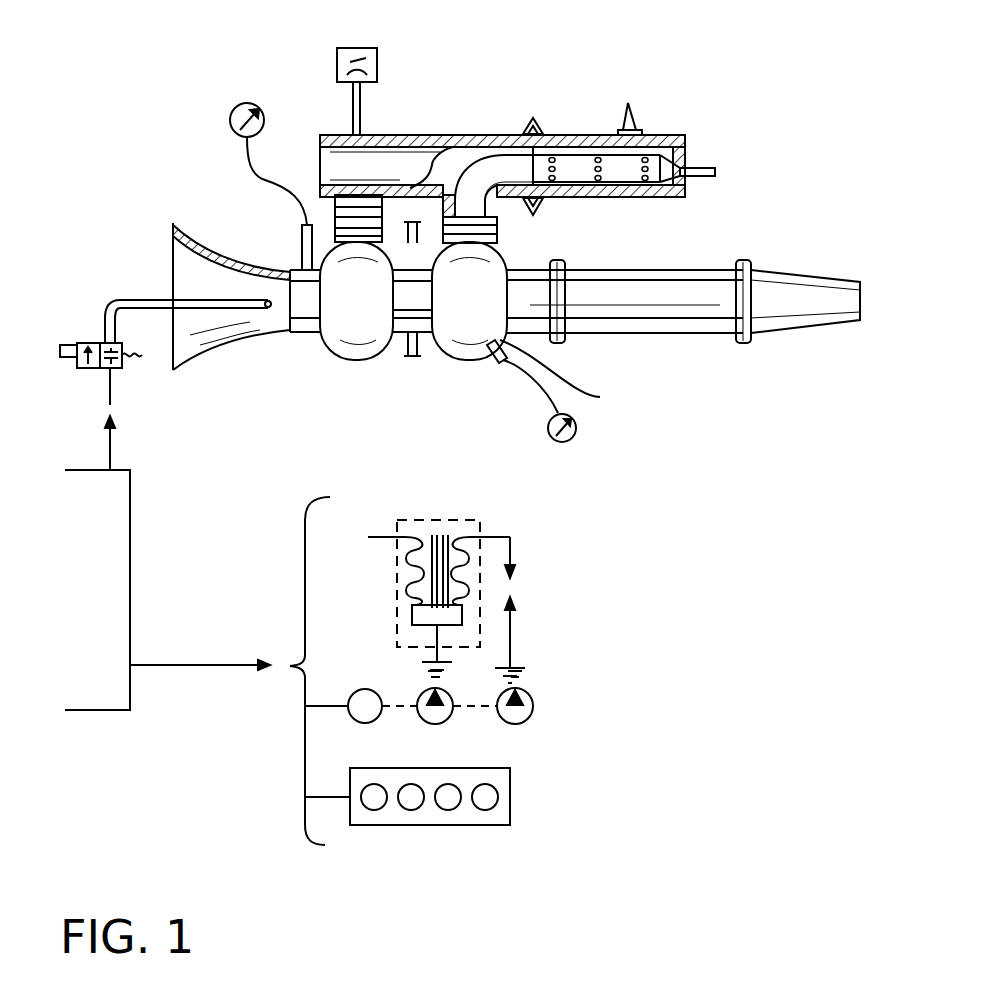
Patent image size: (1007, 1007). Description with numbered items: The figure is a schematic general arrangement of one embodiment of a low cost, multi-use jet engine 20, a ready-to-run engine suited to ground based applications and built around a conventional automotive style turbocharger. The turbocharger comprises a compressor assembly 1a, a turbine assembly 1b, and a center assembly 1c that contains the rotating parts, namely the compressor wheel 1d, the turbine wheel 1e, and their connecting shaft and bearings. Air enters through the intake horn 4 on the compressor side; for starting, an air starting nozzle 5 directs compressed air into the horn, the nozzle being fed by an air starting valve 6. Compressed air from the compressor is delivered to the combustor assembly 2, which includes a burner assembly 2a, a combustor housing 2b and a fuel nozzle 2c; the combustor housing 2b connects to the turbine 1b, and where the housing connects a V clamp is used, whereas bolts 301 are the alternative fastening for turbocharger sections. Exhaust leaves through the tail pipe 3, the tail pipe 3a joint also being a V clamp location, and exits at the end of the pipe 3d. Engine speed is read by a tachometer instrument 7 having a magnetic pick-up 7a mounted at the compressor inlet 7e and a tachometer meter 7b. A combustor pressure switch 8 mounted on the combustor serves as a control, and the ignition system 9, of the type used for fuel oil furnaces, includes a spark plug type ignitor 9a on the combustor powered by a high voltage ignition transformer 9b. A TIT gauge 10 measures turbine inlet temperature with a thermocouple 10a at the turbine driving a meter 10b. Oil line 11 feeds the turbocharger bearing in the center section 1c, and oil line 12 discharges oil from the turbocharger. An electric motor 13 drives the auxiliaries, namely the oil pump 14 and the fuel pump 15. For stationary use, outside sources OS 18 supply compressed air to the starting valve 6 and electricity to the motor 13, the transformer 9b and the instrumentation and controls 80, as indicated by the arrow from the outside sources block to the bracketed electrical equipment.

The compressor assembly 1a is at (345, 362).
The turbine assembly 1b is at (568, 374).
The center assembly 1c is at (430, 352).
The compressor wheel 1d is at (362, 318).
The turbine wheel 1e is at (480, 306).
The combustor assembly 2 is at (398, 135).
The burner assembly 2a is at (625, 162).
The combustor housing 2b is at (633, 197).
The fuel nozzle 2c is at (690, 170).
The tail pipe 3 is at (640, 337).
The tail pipe 3a is at (703, 337).
The nozzle outlet 3d is at (793, 278).
The intake horn 4 is at (222, 262).
The air starting nozzle 5 is at (160, 298).
The air starting valve 6 is at (92, 343).
The tachometer instrument 7 is at (237, 108).
The magnetic pick-up 7a is at (300, 252).
The tachometer meter 7b is at (232, 124).
The inlet section 7e is at (302, 325).
The combustor pressure switch 8 is at (362, 48).
The ignition system 9 is at (397, 633).
The spark plug type ignitor 9a is at (638, 115).
The high voltage ignition transformer 9b is at (405, 565).
The TIT gauge 10 is at (577, 428).
The thermocouple 10a is at (491, 365).
The meter 10b is at (560, 442).
The oil line 11 is at (408, 243).
The oil line 12 is at (406, 356).
The electric motor 13 is at (346, 723).
The oil pump 14 is at (420, 714).
The fuel pump 15 is at (497, 714).
The outside sources 18 is at (130, 560).
The jet engine 20 is at (742, 440).
The instrumental and controls 80 is at (480, 824).
The bolts 301 is at (538, 123).